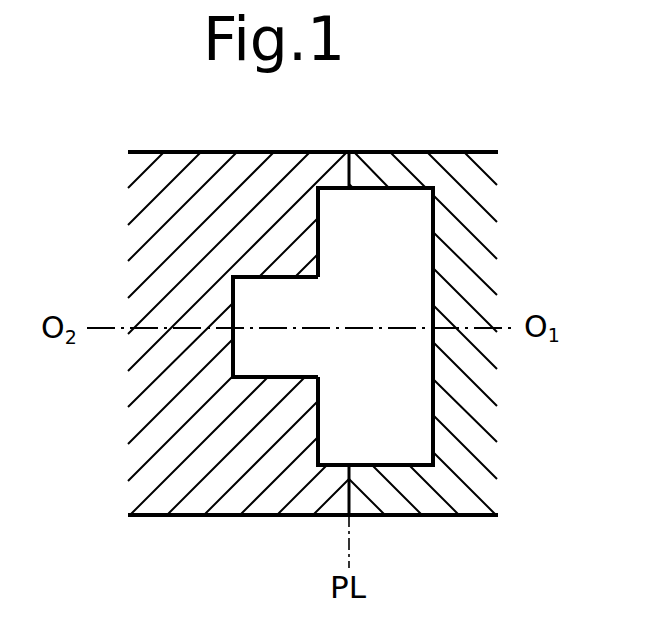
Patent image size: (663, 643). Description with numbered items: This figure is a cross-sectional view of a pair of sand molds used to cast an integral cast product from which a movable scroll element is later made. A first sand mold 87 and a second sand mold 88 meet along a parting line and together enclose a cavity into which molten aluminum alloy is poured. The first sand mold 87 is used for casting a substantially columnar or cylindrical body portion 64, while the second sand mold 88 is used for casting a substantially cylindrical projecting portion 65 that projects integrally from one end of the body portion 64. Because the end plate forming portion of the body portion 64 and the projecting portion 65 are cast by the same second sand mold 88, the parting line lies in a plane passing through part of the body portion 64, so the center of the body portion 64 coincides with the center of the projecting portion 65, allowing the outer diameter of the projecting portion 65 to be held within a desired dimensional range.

The body portion 64 is at (408, 208).
The projecting portion 65 is at (282, 292).
The first sand mold 87 is at (472, 240).
The second sand mold 88 is at (145, 252).